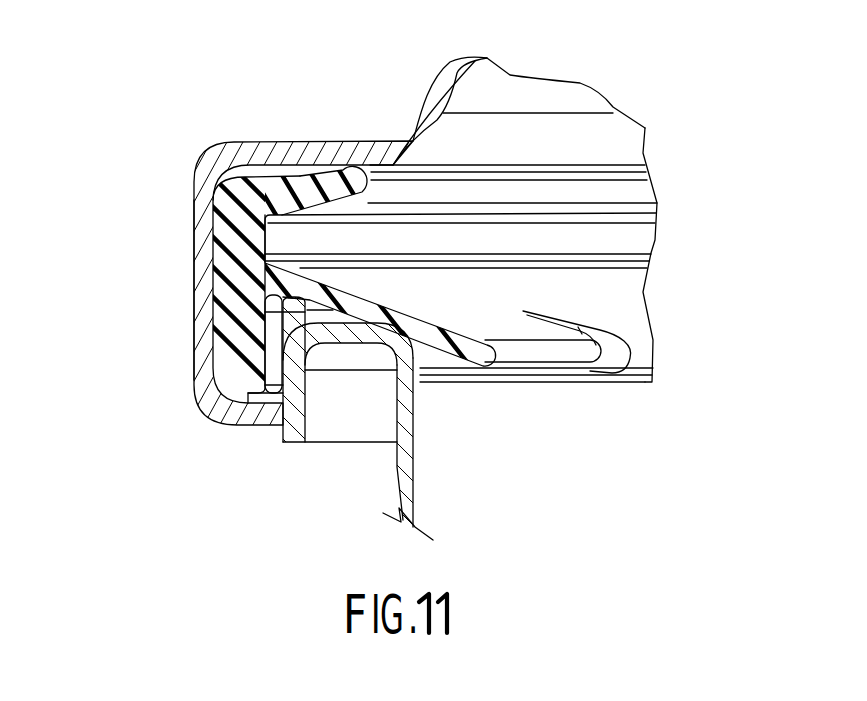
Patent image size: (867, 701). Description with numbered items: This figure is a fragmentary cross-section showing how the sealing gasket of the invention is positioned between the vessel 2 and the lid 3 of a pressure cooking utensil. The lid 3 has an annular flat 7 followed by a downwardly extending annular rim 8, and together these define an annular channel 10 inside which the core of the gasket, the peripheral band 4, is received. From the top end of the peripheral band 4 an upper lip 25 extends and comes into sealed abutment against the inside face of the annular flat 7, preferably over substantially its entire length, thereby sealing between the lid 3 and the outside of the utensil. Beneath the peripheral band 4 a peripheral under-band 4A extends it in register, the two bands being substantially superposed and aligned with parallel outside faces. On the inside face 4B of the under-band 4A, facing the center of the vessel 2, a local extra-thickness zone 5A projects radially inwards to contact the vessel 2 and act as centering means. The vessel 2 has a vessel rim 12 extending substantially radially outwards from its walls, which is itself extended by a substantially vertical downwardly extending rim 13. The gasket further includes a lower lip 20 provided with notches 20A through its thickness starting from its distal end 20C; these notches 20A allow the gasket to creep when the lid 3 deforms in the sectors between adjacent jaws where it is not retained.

The vessel 2 is at (420, 433).
The lid 3 is at (428, 92).
The peripheral band 4 is at (245, 232).
The peripheral under-band 4A is at (230, 348).
The inside face 4B is at (228, 383).
The local extra-thickness zone 5A is at (293, 322).
The annular flat 7 is at (288, 152).
The downwardly extending annular rim 8 is at (200, 283).
The annular channel 10 is at (190, 205).
The vessel rim 12 is at (360, 345).
The downwardly extending rim 13 is at (297, 400).
The lower lip 20 is at (617, 302).
The notch 20A is at (612, 352).
The distal end 20C is at (513, 353).
The upper lip 25 is at (318, 192).